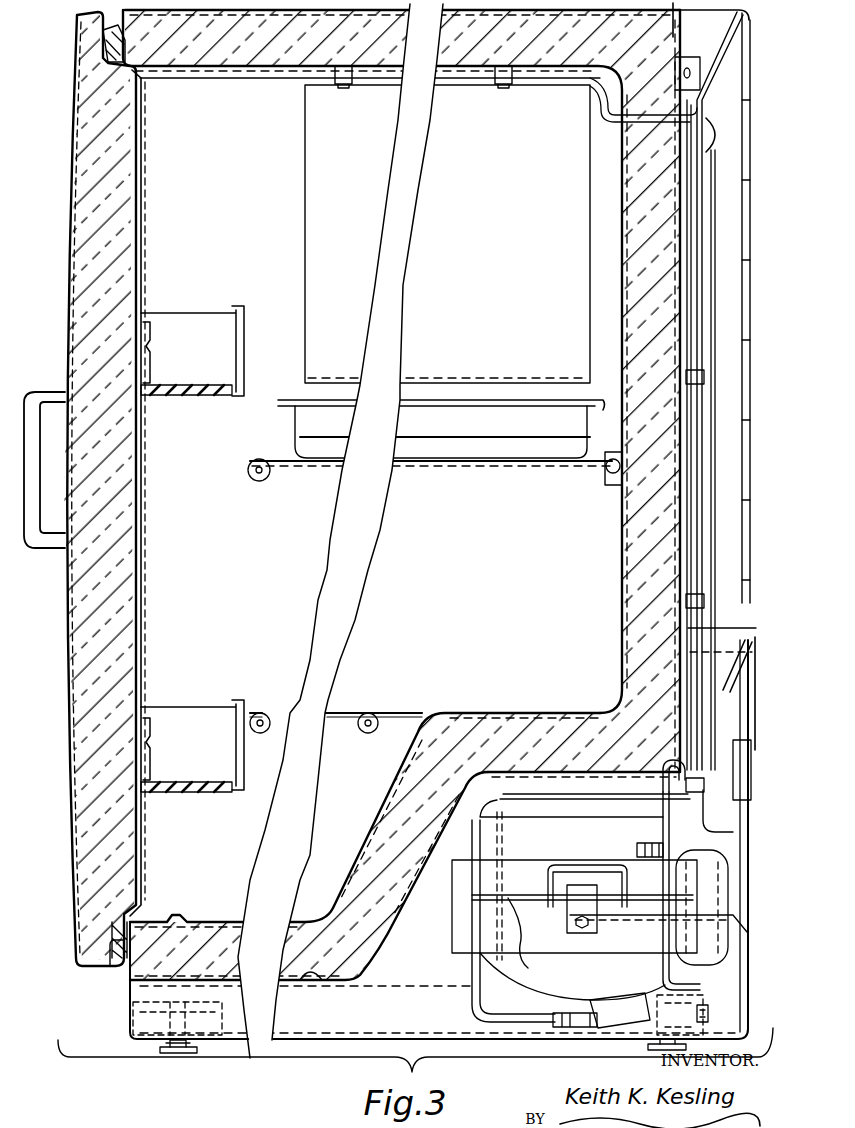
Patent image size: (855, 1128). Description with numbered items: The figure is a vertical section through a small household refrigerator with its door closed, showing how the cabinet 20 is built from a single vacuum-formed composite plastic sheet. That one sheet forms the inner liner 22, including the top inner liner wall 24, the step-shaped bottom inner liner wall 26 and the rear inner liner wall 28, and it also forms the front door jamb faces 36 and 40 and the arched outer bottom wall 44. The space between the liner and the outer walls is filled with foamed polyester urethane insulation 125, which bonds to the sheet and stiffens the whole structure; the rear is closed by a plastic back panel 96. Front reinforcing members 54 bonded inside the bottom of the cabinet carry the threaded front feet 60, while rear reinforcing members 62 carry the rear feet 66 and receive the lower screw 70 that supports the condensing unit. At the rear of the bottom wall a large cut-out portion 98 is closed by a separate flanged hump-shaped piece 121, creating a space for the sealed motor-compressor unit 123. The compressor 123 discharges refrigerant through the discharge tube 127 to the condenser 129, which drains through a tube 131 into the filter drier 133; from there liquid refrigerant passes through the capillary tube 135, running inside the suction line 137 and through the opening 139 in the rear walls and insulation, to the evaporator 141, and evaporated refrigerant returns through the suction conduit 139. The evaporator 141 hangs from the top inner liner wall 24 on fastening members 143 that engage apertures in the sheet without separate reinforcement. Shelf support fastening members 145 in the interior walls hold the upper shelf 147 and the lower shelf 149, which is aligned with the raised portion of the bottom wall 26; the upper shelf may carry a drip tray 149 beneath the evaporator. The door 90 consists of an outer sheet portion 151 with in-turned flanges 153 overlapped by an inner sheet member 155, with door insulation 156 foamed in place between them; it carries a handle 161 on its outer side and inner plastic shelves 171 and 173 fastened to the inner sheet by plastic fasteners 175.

The cabinet 20 is at (143, 990).
The inner liner 22 is at (404, 543).
The top inner liner wall 24 is at (232, 70).
The bottom inner liner wall 26 is at (458, 712).
The rear inner liner wall 28 is at (622, 505).
The door jamb face 36 is at (112, 26).
The door jamb face 40 is at (128, 962).
The outer bottom wall 44 is at (225, 985).
The front reinforcing member 54 is at (133, 1010).
The front foot 60 is at (180, 1053).
The rear reinforcing member 62 is at (705, 1000).
The rear foot 66 is at (660, 1049).
The lower screw 70 is at (709, 1012).
The door 90 is at (75, 630).
The back panel 96 is at (680, 32).
The cut-out portion 98 is at (300, 982).
The hump-shaped piece 121 is at (365, 977).
The sealed motor-compressor unit 123 is at (480, 845).
The foamed polyester urethane plastic insulation 125 is at (520, 750).
The discharge tube 127 is at (716, 832).
The condenser 129 is at (744, 405).
The tube 131 is at (716, 812).
The filter drier 133 is at (715, 893).
The capillary tube 135 is at (704, 785).
The suction line 137 is at (712, 130).
The opening / suction conduit 139 is at (700, 96).
The evaporator 141 is at (320, 215).
The fastening member 143 is at (352, 84).
The shelf support fastening member 145 is at (262, 482).
The upper shelf 147 is at (420, 466).
The lower shelf / drip tray 149 is at (292, 428).
The outer plastic sheet portion 151 is at (73, 812).
The in-turned flange 153 is at (110, 945).
The inner sheet member 155 is at (142, 618).
The door insulation 156 is at (108, 478).
The handle 161 is at (40, 392).
The inner plastic door shelf 171 is at (200, 318).
The inner plastic door shelf 173 is at (195, 712).
The plastic fastener 175 is at (152, 350).